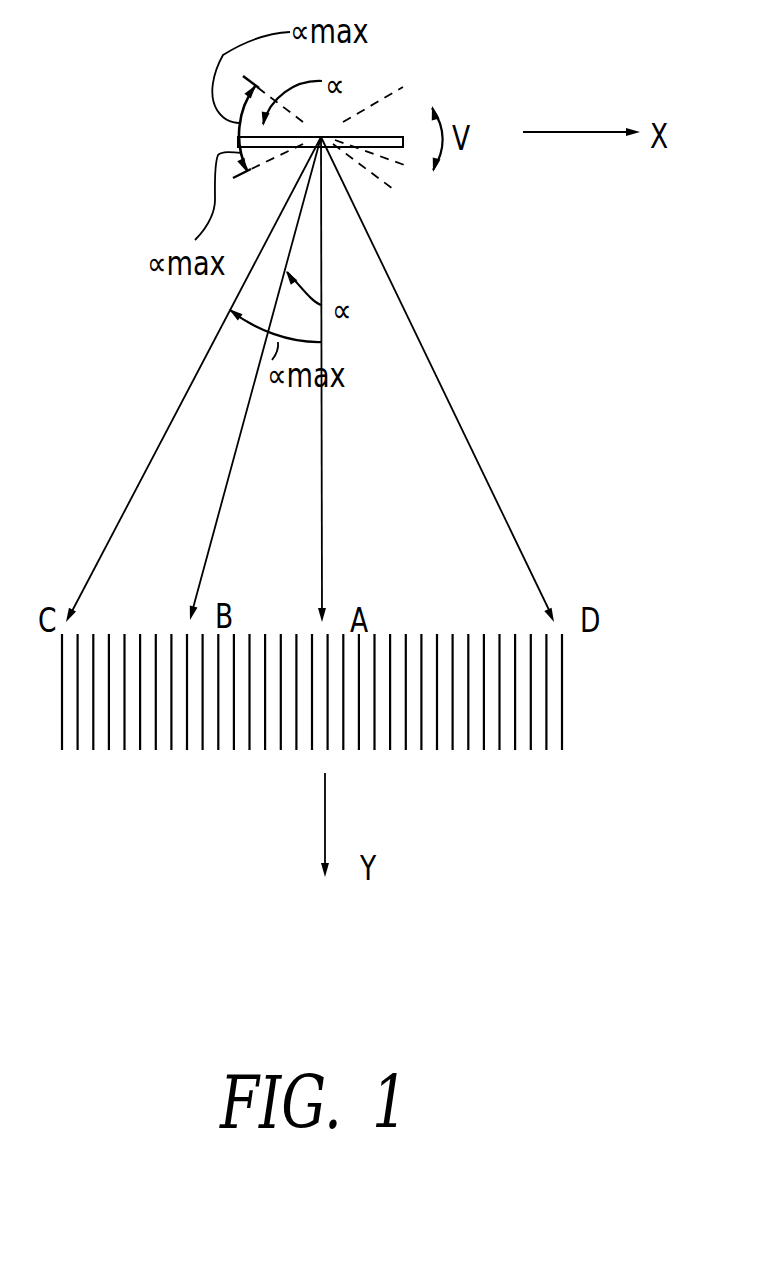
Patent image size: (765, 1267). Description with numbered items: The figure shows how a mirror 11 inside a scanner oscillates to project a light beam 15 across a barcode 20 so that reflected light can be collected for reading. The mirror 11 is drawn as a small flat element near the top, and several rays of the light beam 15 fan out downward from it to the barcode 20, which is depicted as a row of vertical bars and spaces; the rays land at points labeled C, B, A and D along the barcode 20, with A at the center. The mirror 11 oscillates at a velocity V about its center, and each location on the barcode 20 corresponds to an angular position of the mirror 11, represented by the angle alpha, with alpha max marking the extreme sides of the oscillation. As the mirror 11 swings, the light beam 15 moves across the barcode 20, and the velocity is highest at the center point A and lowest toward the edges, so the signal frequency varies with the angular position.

The mirror 11 is at (470, 73).
The light beam 15 is at (163, 435).
The barcode 20 is at (628, 780).